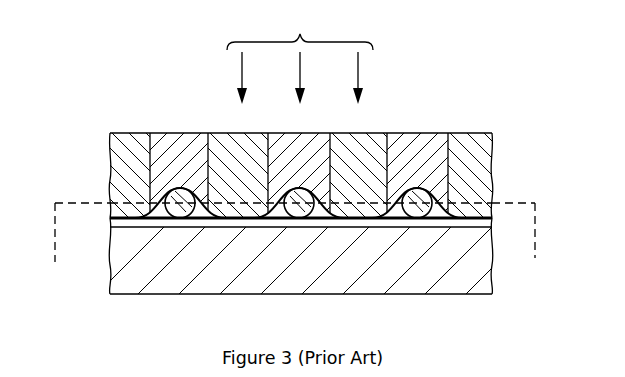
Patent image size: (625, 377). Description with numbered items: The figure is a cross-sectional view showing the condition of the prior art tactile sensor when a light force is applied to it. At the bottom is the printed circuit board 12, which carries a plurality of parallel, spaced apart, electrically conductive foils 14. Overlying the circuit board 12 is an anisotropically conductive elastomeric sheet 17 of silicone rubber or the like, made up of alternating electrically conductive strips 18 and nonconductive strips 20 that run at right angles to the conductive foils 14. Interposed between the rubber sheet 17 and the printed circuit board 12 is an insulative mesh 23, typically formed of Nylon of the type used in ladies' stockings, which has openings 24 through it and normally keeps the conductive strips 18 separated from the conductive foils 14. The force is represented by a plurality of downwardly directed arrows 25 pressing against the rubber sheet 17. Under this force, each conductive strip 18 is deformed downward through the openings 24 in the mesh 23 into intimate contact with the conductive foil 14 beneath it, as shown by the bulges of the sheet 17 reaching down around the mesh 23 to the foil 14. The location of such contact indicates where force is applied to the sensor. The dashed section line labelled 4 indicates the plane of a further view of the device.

The section line / region of interest 4 is at (292, 245).
The printed circuit board 12 is at (120, 282).
The conductive foil 14 is at (488, 228).
The anisotropically conductive elastomeric sheet 17 is at (434, 113).
The electrically conductive strip 18 is at (481, 172).
The nonconductive strip 20 is at (428, 172).
The insulative mesh 23 is at (172, 217).
The opening 24 is at (200, 210).
The downwardly directed arrow 25 is at (312, 27).